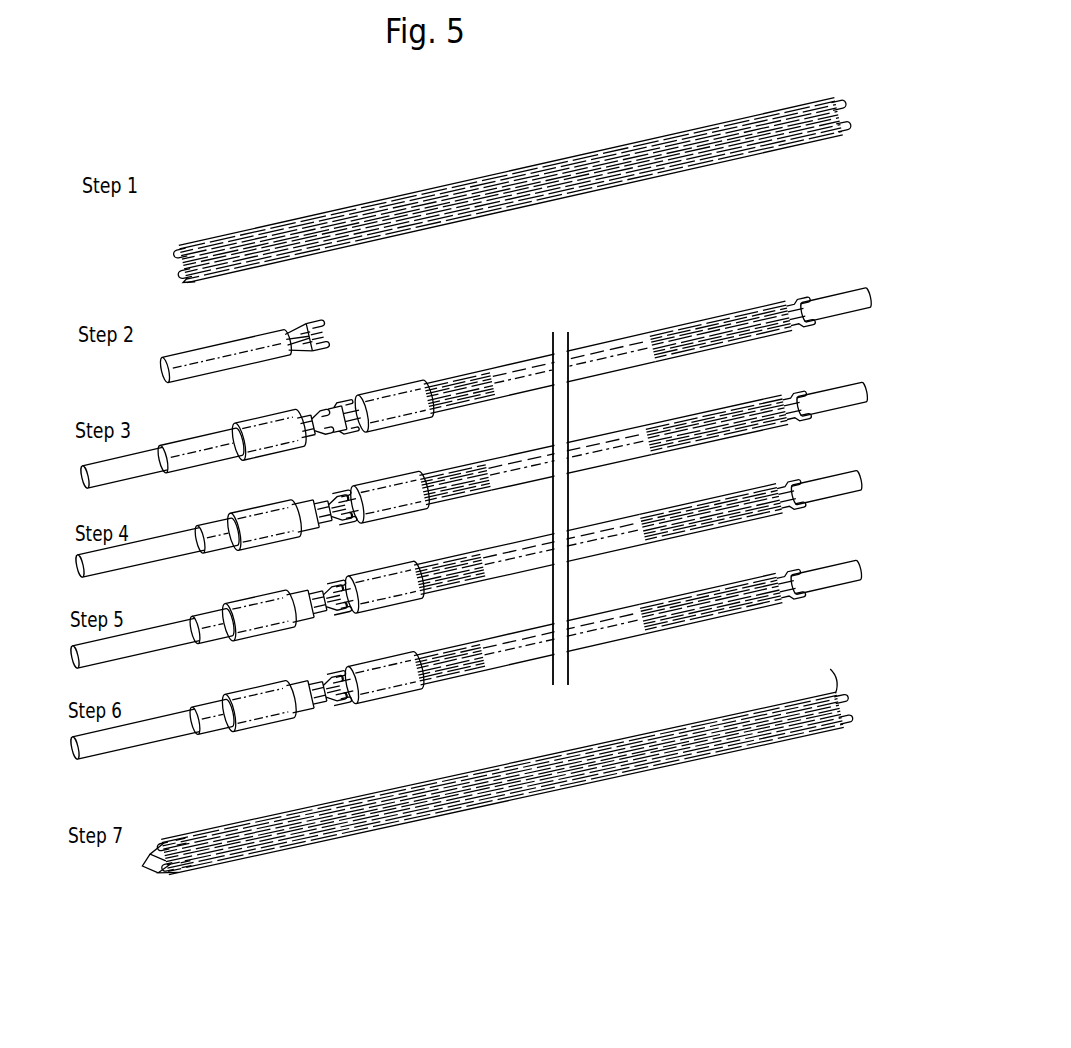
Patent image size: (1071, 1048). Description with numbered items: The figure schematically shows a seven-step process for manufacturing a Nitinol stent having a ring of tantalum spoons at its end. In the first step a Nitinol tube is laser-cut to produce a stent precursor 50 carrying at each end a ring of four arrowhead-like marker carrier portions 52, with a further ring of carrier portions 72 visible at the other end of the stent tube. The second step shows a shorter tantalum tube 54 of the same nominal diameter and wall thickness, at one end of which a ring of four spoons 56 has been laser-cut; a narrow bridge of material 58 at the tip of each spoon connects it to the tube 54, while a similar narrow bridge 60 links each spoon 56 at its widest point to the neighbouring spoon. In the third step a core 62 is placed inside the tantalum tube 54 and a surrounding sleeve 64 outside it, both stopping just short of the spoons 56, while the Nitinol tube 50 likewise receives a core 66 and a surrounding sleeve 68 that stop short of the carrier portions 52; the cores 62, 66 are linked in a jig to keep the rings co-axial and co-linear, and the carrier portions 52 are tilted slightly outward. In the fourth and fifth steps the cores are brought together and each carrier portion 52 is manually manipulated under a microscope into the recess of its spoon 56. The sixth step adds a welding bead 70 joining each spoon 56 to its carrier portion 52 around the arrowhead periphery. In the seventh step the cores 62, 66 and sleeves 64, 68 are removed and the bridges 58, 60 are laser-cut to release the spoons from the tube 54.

The stent precursor 50 is at (396, 198).
The marker carrier portions 52 is at (181, 272).
The tantalum tube 54 is at (220, 342).
The spoons 56 is at (296, 330).
The narrow bridge of material 58 is at (290, 331).
The narrow bridge 60 is at (322, 335).
The core 62 is at (152, 468).
The surrounding sleeve 64 is at (256, 462).
The core 66 is at (841, 292).
The surrounding sleeve 68 is at (413, 426).
The welding bead 70 is at (337, 670).
The ring of carrier portions 72 is at (792, 300).